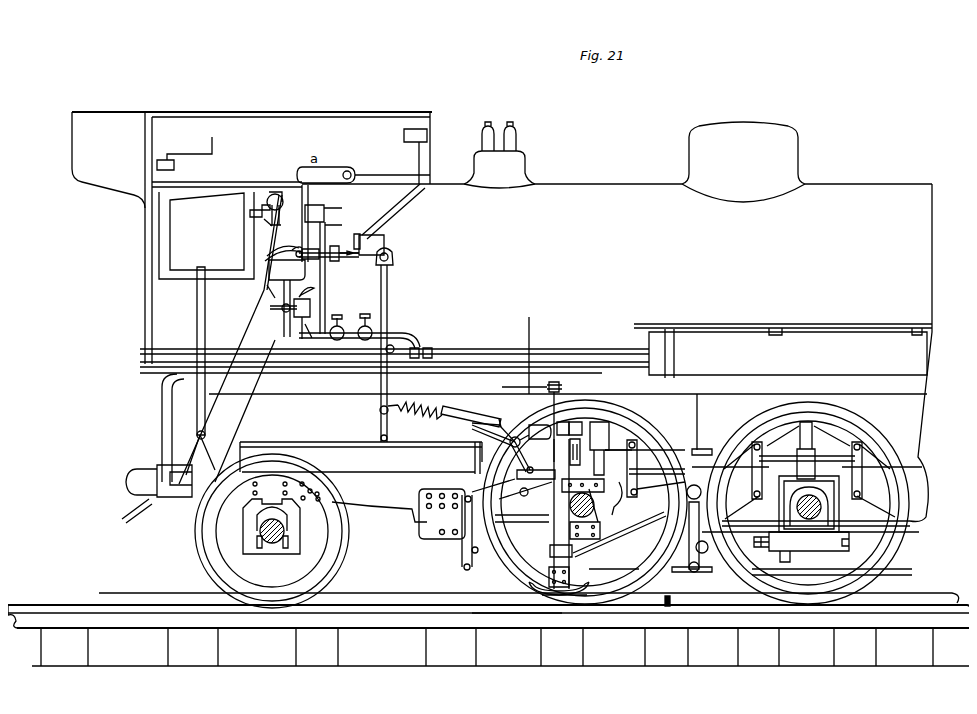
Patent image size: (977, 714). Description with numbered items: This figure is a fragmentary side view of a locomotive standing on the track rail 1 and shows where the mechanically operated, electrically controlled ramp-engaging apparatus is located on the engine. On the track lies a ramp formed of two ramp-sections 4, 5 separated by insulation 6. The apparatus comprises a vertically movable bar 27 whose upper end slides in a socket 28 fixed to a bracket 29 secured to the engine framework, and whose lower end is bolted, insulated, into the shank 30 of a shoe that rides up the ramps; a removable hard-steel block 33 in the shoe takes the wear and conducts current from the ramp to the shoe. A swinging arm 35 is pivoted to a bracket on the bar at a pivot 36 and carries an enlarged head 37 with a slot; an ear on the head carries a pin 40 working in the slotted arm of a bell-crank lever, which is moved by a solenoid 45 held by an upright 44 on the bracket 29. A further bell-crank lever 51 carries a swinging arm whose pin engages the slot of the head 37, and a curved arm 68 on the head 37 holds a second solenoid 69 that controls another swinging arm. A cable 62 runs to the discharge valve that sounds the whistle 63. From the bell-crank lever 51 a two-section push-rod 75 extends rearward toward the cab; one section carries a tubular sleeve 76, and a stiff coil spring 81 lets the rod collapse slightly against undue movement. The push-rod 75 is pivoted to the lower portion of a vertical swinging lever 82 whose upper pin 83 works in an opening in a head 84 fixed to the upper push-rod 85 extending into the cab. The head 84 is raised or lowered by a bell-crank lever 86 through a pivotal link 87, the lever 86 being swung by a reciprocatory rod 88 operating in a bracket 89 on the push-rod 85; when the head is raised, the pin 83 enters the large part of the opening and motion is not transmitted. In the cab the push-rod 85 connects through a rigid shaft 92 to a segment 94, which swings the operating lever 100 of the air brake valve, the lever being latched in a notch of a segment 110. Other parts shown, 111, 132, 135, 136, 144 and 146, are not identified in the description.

The track rail 1 is at (516, 609).
The ramp-section 4 is at (379, 592).
The ramp-section 5 is at (899, 592).
The insulation 6 is at (660, 588).
The bar 27 is at (555, 532).
The socket 28 is at (583, 537).
The bracket 29 is at (588, 490).
The shank 30 is at (550, 565).
The removable block 33 is at (556, 586).
The swinging arm 35 is at (558, 483).
The pivot 36 is at (563, 422).
The enlarged head 37 is at (578, 423).
The pin 40 is at (618, 452).
The upright 44 is at (584, 455).
The solenoid 45 is at (603, 433).
The bell-crank lever 51 is at (530, 586).
The cable 62 is at (560, 393).
The whistle 63 is at (165, 158).
The curved arm 68 is at (508, 430).
The solenoid 69 is at (536, 423).
The push-rod 75 is at (488, 425).
The tubular sleeve 76 is at (462, 423).
The coil spring 81 is at (430, 416).
The vertical swinging lever 82 is at (387, 303).
The pin 83 is at (390, 253).
The head 84 is at (392, 260).
The upper push-rod 85 is at (343, 260).
The bell-crank lever 86 is at (378, 233).
The pivotal link 87 is at (353, 234).
The reciprocatory rod 88 is at (312, 247).
The bracket 89 is at (336, 241).
The rigid shaft 92 is at (295, 246).
The segment 94 is at (265, 250).
The operating lever 100 is at (291, 237).
The segment 110 is at (268, 264).
The rod 111 is at (277, 272).
The fitting 132 is at (248, 212).
The fitting 135 is at (260, 205).
The fitting 136 is at (262, 219).
The gauge 144 is at (274, 192).
The fitting 146 is at (277, 200).